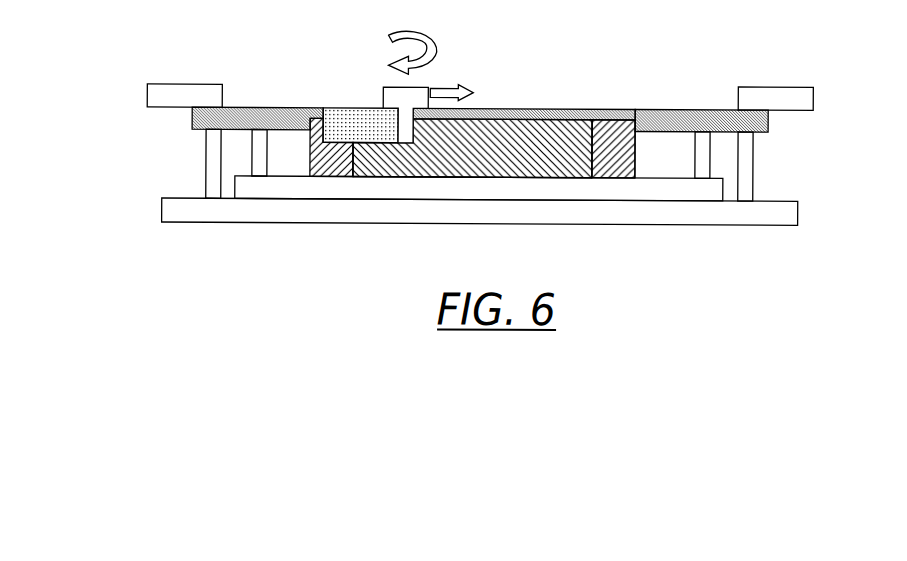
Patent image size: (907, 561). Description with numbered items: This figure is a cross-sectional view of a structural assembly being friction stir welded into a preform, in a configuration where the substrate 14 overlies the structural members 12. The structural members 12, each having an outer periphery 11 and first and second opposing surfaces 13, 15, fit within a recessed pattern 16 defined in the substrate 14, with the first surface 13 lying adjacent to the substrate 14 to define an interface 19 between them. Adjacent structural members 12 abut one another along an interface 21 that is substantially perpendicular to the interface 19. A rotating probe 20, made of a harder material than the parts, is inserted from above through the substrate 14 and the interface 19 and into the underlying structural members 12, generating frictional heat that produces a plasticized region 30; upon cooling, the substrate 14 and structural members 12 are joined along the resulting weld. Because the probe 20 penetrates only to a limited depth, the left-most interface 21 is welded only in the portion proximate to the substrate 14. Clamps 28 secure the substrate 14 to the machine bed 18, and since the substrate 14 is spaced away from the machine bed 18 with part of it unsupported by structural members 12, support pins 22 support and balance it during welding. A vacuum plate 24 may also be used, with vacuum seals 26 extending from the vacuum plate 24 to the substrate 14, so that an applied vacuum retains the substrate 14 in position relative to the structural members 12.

The outer periphery 11 is at (636, 143).
The structural members 12 is at (618, 133).
The first surface 13 is at (530, 115).
The substrate 14 is at (675, 105).
The second surface 15 is at (518, 178).
The recessed pattern 16 is at (310, 116).
The machine bed 18 is at (782, 210).
The interface 19 is at (492, 115).
The probe 20 is at (383, 86).
The interface 21 is at (357, 149).
The support pins 22 is at (212, 152).
The vacuum plate 24 is at (252, 190).
The vacuum seals 26 is at (252, 163).
The clamps 28 is at (183, 83).
The plasticized region 30 is at (355, 119).